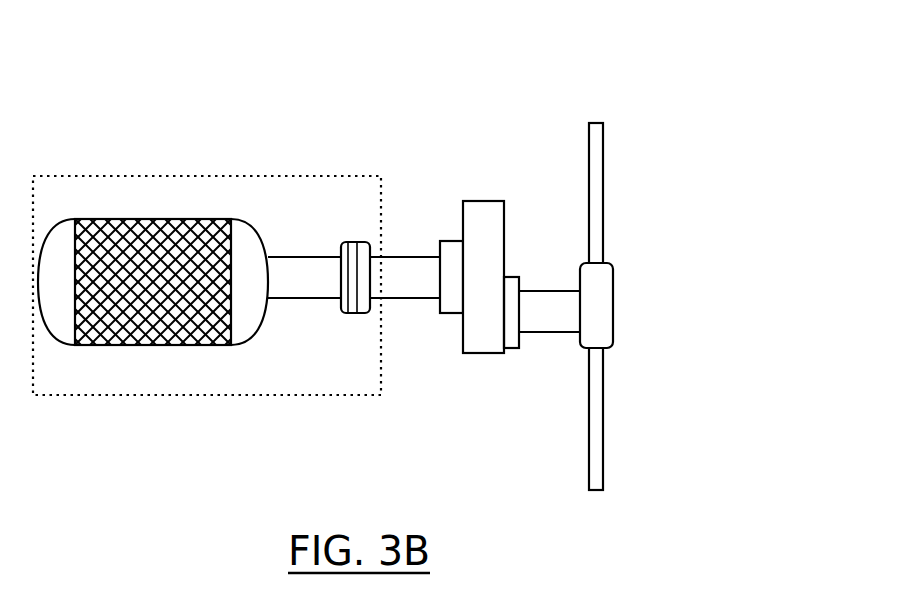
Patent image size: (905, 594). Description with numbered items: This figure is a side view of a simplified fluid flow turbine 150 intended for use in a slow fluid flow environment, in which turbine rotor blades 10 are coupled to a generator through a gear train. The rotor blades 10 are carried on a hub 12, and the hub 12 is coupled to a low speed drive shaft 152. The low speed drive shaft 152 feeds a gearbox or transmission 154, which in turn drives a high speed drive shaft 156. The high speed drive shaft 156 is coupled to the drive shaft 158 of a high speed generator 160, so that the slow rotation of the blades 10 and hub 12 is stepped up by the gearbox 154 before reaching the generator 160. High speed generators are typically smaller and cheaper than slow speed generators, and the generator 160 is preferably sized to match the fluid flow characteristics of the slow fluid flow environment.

The rotor blade 10 is at (597, 397).
The hub 12 is at (598, 305).
The turbine 150 is at (762, 138).
The low speed drive shaft 152 is at (560, 307).
The gearbox or transmission 154 is at (488, 218).
The high speed drive shaft 156 is at (360, 302).
The drive shaft 158 is at (303, 275).
The high speed generator 160 is at (140, 292).